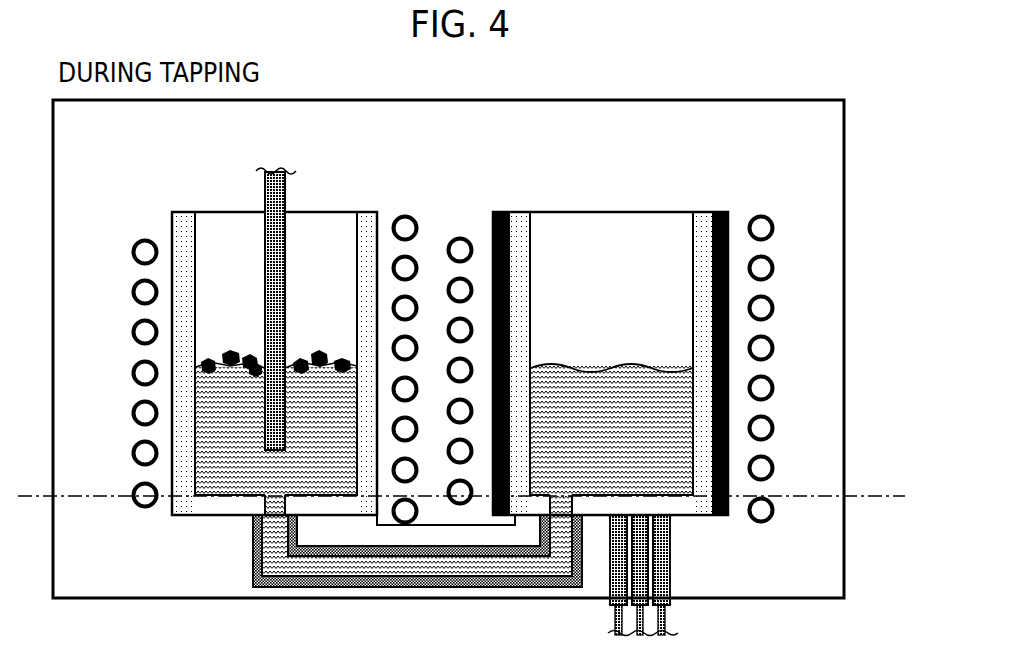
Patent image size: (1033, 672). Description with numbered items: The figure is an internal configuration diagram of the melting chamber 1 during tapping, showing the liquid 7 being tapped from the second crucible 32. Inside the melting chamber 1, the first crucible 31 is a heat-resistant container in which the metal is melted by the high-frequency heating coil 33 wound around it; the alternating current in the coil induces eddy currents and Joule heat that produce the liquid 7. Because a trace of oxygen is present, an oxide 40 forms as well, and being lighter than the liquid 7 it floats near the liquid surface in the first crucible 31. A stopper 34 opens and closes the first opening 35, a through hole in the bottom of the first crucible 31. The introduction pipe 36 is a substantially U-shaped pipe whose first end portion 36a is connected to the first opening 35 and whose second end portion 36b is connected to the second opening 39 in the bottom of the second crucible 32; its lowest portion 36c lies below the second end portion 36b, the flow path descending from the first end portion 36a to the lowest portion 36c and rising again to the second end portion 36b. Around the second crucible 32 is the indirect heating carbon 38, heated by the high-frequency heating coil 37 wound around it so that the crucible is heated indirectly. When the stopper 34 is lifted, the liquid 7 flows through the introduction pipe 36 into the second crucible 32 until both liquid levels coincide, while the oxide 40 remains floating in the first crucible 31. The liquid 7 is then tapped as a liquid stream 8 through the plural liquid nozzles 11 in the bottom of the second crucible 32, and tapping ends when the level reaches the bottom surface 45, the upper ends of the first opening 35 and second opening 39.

The melting chamber 1 is at (827, 135).
The liquid 7 is at (571, 363).
The liquid stream 8 is at (665, 620).
The liquid nozzles 11 is at (670, 578).
The first crucible 31 is at (187, 212).
The second crucible 32 is at (527, 212).
The high-frequency heating coil 33 is at (143, 239).
The stopper 34 is at (290, 188).
The first opening 35 is at (265, 504).
The introduction pipe 36 is at (253, 566).
The first end portion 36a is at (297, 518).
The second end portion 36b is at (578, 510).
The lowest portion 36c is at (418, 565).
The high-frequency heating coil 37 is at (758, 215).
The indirect heating carbon 38 is at (722, 212).
The second opening 39 is at (552, 505).
The oxide 40 is at (298, 360).
The bottom surface 45 is at (90, 494).